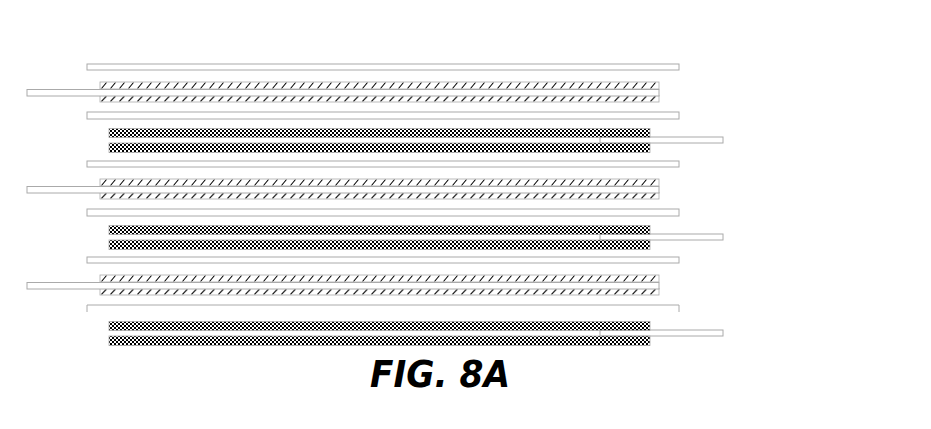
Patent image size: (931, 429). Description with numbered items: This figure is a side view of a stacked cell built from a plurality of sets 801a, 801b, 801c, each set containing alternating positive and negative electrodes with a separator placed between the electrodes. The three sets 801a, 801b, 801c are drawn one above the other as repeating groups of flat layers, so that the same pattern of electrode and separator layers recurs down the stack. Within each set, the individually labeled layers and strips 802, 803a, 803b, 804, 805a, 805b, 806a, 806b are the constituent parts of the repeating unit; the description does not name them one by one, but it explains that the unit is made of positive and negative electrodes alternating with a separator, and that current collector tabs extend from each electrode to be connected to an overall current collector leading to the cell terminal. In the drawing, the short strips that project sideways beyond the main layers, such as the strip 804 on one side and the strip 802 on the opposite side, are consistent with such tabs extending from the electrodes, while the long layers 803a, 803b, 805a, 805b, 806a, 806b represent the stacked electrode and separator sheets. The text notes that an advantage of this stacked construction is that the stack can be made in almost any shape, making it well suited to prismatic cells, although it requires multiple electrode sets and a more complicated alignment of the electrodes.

The set of alternating positive and negative electrodes 801a is at (737, 64).
The set of alternating positive and negative electrodes 801b is at (737, 160).
The set of alternating positive and negative electrodes 801c is at (737, 257).
The negative electrode tab 802 is at (697, 138).
The negative electrode active material layer 803a is at (602, 135).
The negative electrode active material layer 803b is at (515, 143).
The positive electrode tab 804 is at (55, 93).
The positive electrode active material layer 805a is at (147, 97).
The positive electrode active material layer 805b is at (230, 83).
The separator 806a is at (442, 70).
The separator 806b is at (378, 112).